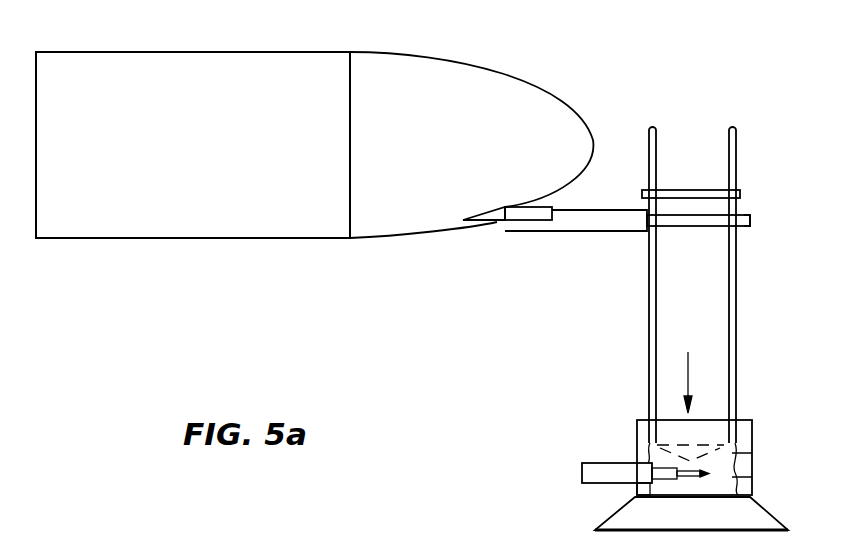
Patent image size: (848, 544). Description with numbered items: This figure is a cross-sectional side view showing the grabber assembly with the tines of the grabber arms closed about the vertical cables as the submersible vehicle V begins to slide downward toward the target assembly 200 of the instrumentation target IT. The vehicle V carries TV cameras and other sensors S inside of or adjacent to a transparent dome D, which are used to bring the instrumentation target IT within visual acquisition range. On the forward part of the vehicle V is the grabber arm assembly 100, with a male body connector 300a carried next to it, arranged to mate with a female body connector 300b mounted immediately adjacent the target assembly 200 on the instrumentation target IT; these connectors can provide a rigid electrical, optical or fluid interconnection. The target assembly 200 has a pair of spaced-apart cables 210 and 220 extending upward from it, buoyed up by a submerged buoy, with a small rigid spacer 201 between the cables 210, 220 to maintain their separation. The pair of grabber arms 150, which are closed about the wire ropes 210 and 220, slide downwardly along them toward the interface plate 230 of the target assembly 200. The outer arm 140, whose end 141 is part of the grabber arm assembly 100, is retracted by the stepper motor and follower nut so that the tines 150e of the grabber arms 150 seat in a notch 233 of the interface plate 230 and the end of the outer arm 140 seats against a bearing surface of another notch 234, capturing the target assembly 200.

The submersible vehicle V is at (193, 52).
The transparent dome D is at (552, 92).
The sensors S is at (512, 73).
The grabber arm assembly 100 is at (387, 230).
The male body connector 300a is at (510, 220).
The outer arm 140 is at (615, 208).
The outer arm 141 is at (642, 226).
The cable 210 is at (648, 292).
The cable 220 is at (736, 262).
The rigid spacer 201 is at (690, 190).
The grabber arms 150 is at (692, 226).
The tines 150e is at (750, 220).
The target assembly 200 is at (691, 371).
The interface plate 230 is at (752, 447).
The notch 233 is at (752, 473).
The female body connector 300b is at (582, 470).
The notch 234 is at (636, 488).
The instrumentation target IT is at (702, 522).